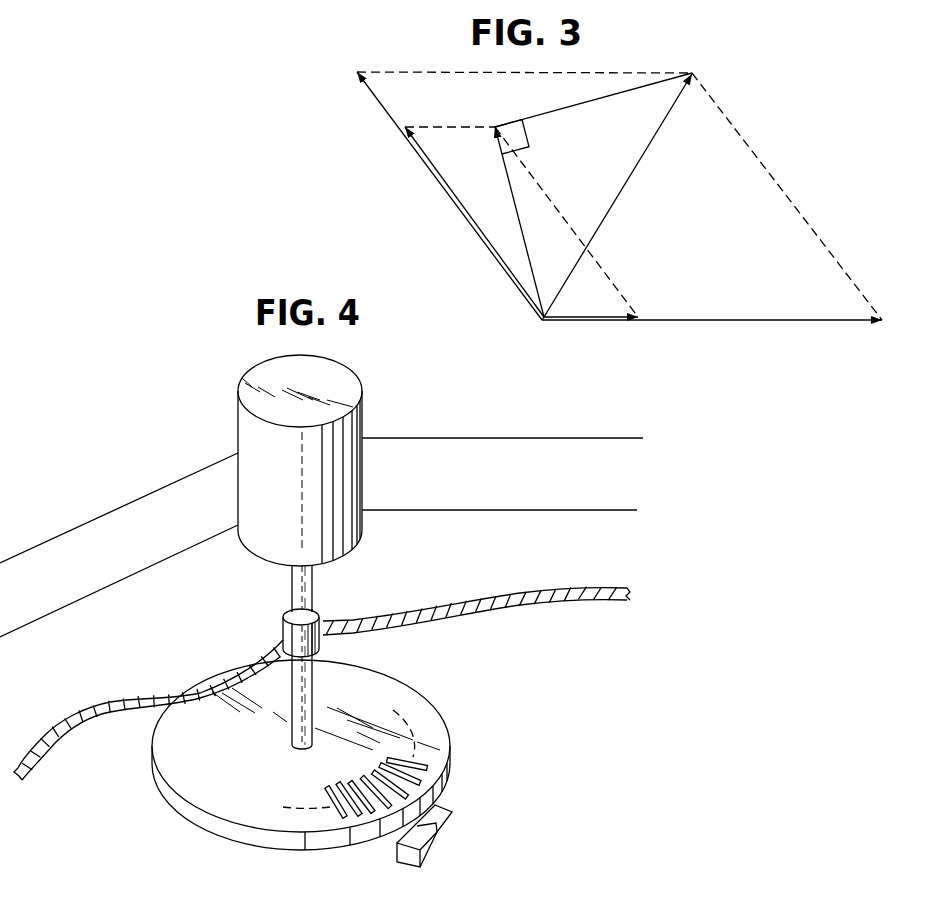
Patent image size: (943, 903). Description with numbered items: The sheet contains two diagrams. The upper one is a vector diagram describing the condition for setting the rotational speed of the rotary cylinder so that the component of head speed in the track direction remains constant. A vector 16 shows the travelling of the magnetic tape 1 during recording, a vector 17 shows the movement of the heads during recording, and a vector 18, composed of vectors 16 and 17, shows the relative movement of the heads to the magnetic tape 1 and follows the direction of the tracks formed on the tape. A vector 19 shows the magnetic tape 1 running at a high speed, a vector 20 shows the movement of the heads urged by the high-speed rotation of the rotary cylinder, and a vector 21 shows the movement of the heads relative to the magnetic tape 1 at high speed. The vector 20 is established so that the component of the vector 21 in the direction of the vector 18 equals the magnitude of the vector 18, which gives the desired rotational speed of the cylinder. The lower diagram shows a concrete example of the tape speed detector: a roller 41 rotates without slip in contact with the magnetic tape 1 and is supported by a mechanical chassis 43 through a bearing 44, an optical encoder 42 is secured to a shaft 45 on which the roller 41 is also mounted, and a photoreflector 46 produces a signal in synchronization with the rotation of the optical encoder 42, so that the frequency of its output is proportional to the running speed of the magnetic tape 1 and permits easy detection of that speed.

In FIG. 4, the magnetic tape 1 is at (573, 453).
In FIG. 3, the vector showing travelling of the magnetic tape during recording 16 is at (605, 317).
In FIG. 3, the vector showing movement of the heads during recording 17 is at (444, 178).
In FIG. 3, the vector showing relative movement of the heads to the magnetic tape during record 18 is at (513, 193).
In FIG. 3, the vector showing the magnetic tape running at a high speed 19 is at (773, 322).
In FIG. 3, the vector showing movement of the heads urged by rotation of the rotary cylinder at 20 is at (378, 100).
In FIG. 3, the vector showing movement of the heads relative to the magnetic tape at high speed 21 is at (660, 130).
In FIG. 4, the roller 41 is at (347, 380).
In FIG. 4, the optical encoder 42 is at (192, 811).
In FIG. 4, the mechanical chassis 43 is at (517, 597).
In FIG. 4, the bearing 44 is at (290, 617).
In FIG. 4, the shaft 45 is at (297, 592).
In FIG. 4, the photoreflector 46 is at (448, 825).